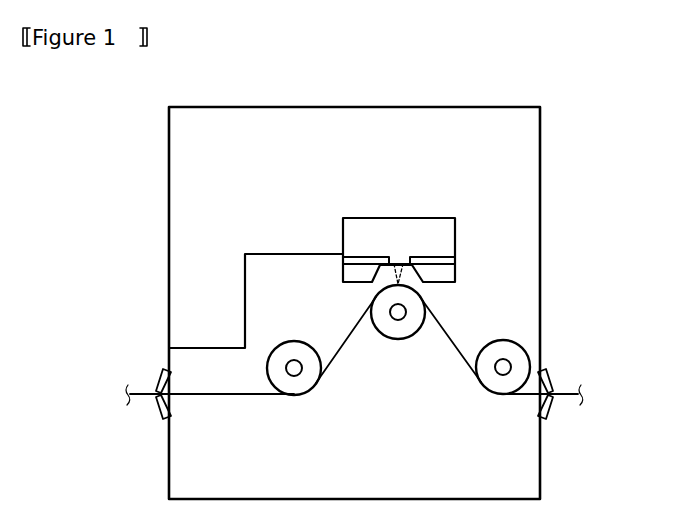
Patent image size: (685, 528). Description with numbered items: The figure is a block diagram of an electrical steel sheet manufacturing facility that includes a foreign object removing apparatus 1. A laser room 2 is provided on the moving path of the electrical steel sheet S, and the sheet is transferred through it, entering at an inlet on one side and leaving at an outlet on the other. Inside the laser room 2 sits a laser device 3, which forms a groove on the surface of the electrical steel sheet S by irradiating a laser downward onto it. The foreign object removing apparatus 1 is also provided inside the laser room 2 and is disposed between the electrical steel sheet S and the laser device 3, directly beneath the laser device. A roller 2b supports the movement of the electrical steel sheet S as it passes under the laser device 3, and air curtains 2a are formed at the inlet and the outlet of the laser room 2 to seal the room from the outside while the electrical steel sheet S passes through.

The foreign object removing apparatus 1 is at (462, 268).
The laser room 2 is at (403, 352).
The air curtain 2a is at (384, 389).
The roller 2b is at (413, 308).
The laser device 3 is at (425, 237).
The electrical steel sheet S is at (219, 395).